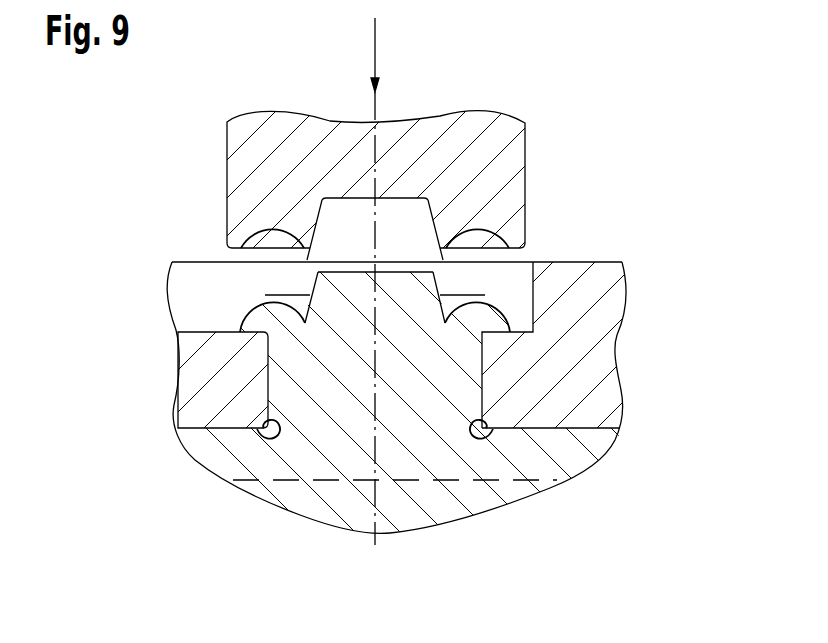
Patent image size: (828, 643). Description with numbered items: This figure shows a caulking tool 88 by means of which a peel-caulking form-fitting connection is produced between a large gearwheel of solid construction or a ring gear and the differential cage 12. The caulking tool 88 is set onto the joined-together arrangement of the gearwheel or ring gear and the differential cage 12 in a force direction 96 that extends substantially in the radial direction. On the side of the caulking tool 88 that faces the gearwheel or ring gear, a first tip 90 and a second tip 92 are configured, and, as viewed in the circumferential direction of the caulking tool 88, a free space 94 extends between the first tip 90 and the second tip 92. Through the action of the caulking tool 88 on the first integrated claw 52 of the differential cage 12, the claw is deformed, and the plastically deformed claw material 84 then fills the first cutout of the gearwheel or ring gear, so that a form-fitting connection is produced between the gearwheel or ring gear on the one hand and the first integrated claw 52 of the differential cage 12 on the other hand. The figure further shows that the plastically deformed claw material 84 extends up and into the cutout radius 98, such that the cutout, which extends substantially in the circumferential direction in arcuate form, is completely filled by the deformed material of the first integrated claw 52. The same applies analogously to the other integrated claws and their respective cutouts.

The differential cage 12 is at (409, 517).
The first integrated claw 52 is at (433, 358).
The plastically deformed claw material 84 is at (258, 316).
The caulking tool 88 is at (480, 130).
The first tip 90 is at (307, 250).
The second tip 92 is at (444, 255).
The free space 94 is at (333, 222).
The force direction 96 is at (376, 37).
The cutout radius 98 is at (266, 295).